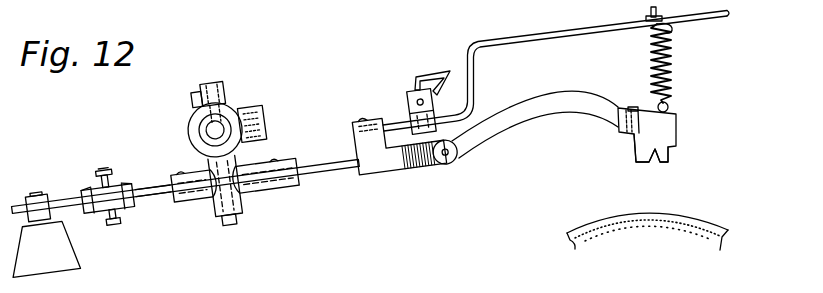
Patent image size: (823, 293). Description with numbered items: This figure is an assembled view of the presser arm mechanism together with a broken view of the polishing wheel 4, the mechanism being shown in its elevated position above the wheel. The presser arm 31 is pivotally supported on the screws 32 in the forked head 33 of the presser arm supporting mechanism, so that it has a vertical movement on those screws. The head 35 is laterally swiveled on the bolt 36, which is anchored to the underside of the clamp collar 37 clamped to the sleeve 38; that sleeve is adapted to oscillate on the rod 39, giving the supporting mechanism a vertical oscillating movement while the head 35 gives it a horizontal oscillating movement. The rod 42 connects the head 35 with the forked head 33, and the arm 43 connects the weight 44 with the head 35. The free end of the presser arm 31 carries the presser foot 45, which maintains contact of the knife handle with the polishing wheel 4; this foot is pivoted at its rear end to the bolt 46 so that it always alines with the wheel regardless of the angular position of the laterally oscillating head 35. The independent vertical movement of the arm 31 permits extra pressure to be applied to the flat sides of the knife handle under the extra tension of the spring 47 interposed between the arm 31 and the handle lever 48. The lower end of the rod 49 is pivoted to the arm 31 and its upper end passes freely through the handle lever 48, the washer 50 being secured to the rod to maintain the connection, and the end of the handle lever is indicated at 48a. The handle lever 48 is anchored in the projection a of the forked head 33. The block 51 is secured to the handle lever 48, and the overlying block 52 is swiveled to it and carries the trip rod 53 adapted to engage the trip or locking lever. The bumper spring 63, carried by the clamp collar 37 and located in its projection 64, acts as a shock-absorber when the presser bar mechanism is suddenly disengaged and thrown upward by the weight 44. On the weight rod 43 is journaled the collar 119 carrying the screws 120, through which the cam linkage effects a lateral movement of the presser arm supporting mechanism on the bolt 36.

The polishing wheel 4 is at (594, 229).
The presser arm 31 is at (557, 98).
The screws 32 is at (456, 158).
The forked head 33 is at (351, 138).
The head 35 is at (268, 169).
The bolt 36 is at (238, 226).
The clamp collar 37 is at (189, 124).
The sleeve 38 is at (200, 131).
The rod 39 is at (219, 125).
The rod 42 is at (331, 173).
The arm 43 is at (166, 196).
The weight 44 is at (41, 232).
The presser foot 45 is at (669, 151).
The bolt 46 is at (632, 110).
The spring 47 is at (672, 73).
The handle lever 48 is at (557, 33).
The rod end 48a is at (729, 13).
The rod 49 is at (647, 16).
The washer 50 is at (673, 30).
The block 51 is at (409, 116).
The overlying block 52 is at (409, 97).
The trip rod 53 is at (433, 73).
The bumper spring 63 is at (250, 110).
The projection 64 is at (266, 117).
The collar 119 is at (94, 190).
The screws 120 is at (109, 171).
The projection a is at (357, 122).